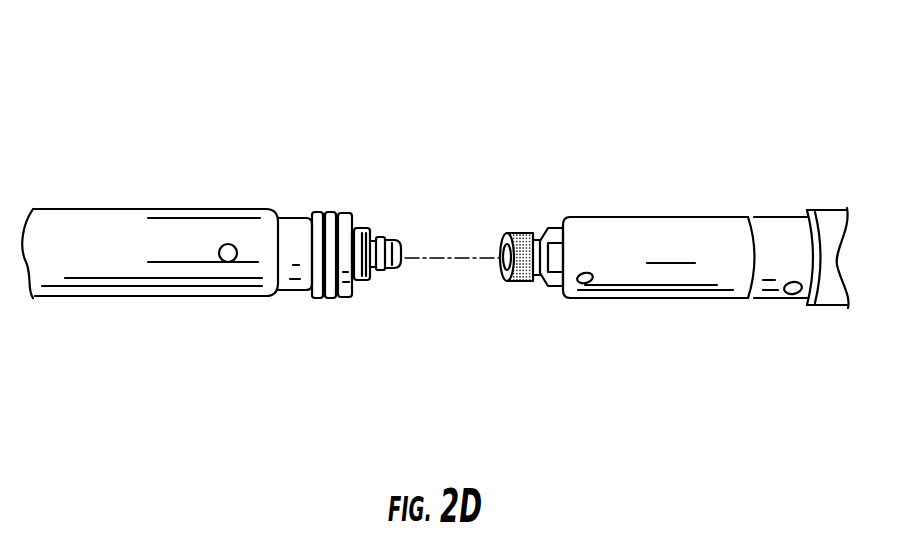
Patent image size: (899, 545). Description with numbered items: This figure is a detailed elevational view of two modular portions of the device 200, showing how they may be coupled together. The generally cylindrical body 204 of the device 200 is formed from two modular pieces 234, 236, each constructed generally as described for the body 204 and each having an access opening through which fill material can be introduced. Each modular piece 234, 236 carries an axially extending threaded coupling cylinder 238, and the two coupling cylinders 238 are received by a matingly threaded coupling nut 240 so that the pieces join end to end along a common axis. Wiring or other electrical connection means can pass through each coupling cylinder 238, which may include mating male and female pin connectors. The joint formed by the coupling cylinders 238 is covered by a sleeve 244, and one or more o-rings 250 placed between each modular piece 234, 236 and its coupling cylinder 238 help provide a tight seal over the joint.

The device 200 is at (784, 191).
The body 204 is at (95, 283).
The modular piece 234 is at (172, 210).
The modular piece 236 is at (829, 300).
The coupling cylinder 238 is at (392, 238).
The coupling nut 240 is at (512, 277).
The sleeve 244 is at (644, 217).
The o-ring 250 is at (312, 206).